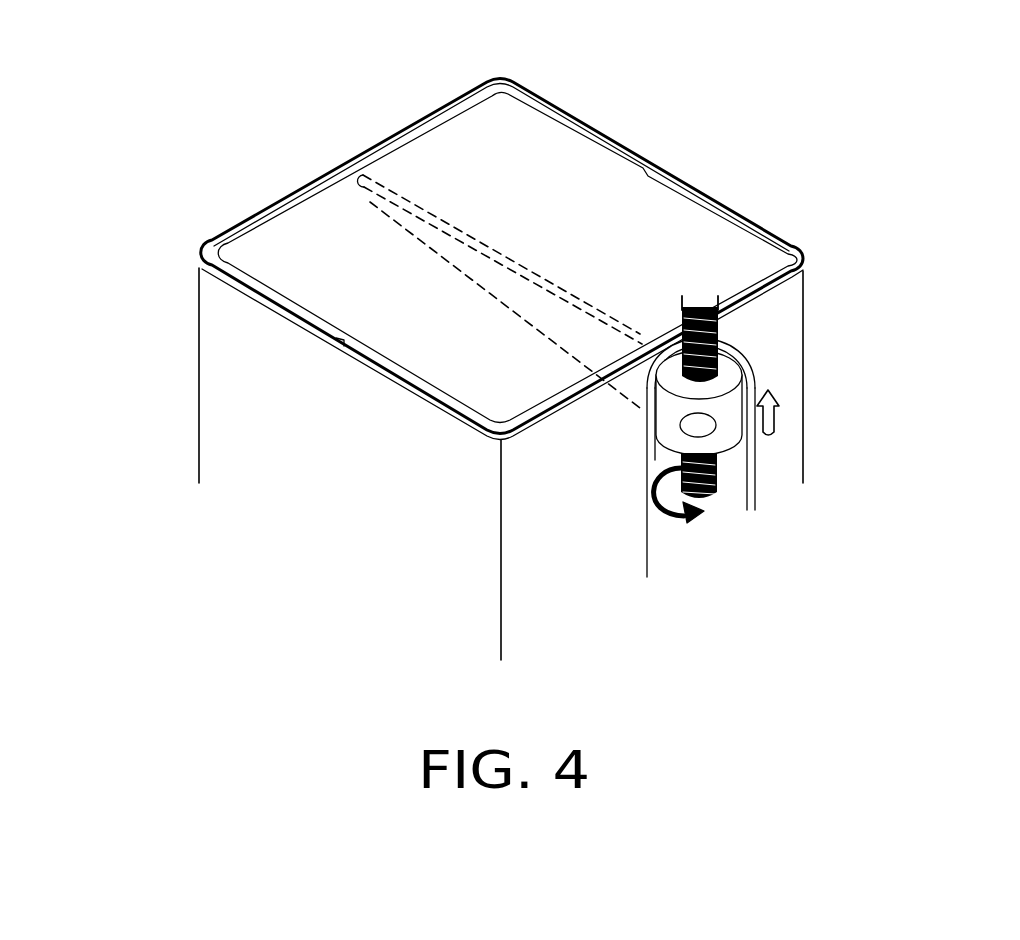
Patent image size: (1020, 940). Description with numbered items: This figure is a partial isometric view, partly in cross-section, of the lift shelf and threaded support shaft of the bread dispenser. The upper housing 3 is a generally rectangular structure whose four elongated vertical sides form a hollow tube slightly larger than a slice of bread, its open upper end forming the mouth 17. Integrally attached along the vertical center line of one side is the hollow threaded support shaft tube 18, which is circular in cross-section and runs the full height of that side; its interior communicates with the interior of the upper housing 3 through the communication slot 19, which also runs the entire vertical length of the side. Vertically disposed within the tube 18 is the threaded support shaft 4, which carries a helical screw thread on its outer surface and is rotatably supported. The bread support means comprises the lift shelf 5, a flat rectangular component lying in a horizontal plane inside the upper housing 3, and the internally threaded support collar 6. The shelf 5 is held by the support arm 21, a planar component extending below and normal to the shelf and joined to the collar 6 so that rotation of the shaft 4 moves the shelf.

The upper housing 3 is at (198, 403).
The threaded support shaft 4 is at (710, 498).
The lift shelf 5 is at (495, 140).
The internally threaded support collar 6 is at (722, 440).
The mouth 17 is at (200, 245).
The threaded support shaft tube 18 is at (743, 352).
The communication slot 19 is at (648, 345).
The support arm 21 is at (403, 223).